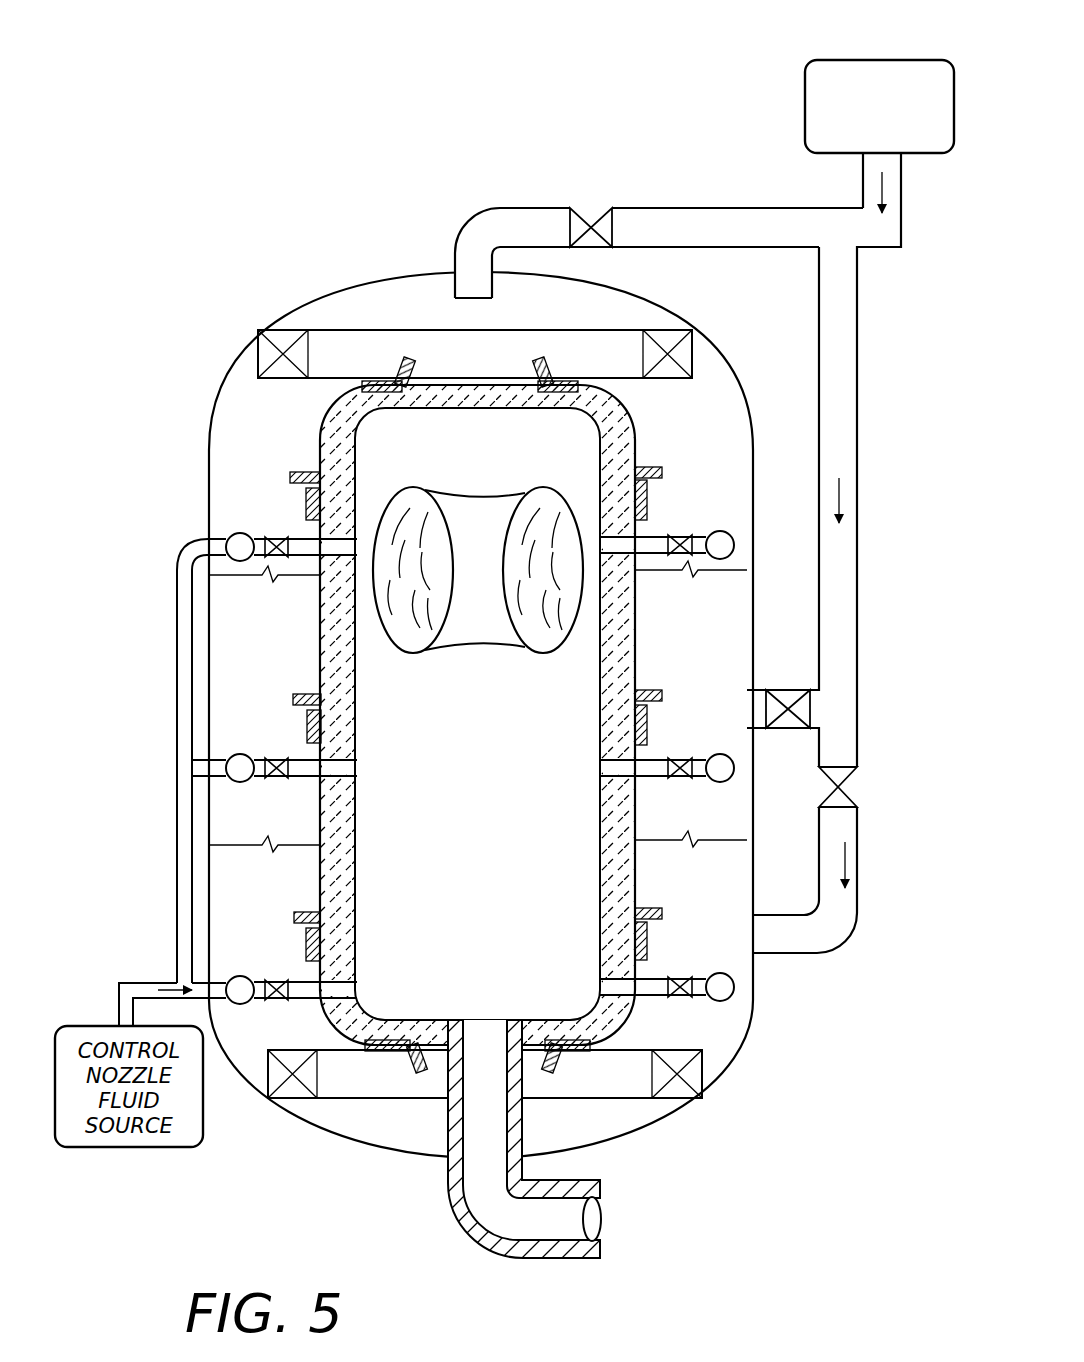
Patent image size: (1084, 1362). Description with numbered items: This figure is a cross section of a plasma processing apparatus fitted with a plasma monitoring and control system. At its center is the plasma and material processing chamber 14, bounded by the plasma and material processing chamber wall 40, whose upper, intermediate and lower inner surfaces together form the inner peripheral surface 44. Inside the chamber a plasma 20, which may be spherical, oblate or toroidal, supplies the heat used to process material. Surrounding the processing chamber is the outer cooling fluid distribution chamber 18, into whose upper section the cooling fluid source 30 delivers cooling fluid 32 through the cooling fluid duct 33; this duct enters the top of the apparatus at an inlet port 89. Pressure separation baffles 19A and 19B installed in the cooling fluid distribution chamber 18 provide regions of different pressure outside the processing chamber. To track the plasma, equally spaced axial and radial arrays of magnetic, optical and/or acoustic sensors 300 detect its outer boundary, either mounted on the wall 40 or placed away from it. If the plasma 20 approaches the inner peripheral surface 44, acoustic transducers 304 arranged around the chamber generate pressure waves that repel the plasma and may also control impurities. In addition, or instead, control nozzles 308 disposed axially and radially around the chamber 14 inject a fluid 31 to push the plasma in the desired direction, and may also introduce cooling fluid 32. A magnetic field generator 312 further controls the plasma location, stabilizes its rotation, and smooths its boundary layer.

The plasma and material processing chamber 14 is at (635, 632).
The cooling fluid distribution chamber 18 is at (750, 512).
The pressure separation baffle 19A is at (300, 578).
The pressure separation baffle 19B is at (300, 846).
The plasma 20 is at (513, 512).
The cooling fluid source 30 is at (868, 58).
The fluid 31 is at (166, 984).
The cooling fluid 32 is at (880, 192).
The cooling fluid duct 33 is at (458, 252).
The plasma and material processing chamber wall 40 is at (640, 662).
The inner peripheral surface 44 is at (364, 881).
The inlet port 89 is at (482, 300).
The sensors 300 is at (668, 913).
The acoustic transducers 304 is at (655, 953).
The control nozzles 308 is at (360, 765).
The magnetic field generator 312 is at (692, 353).